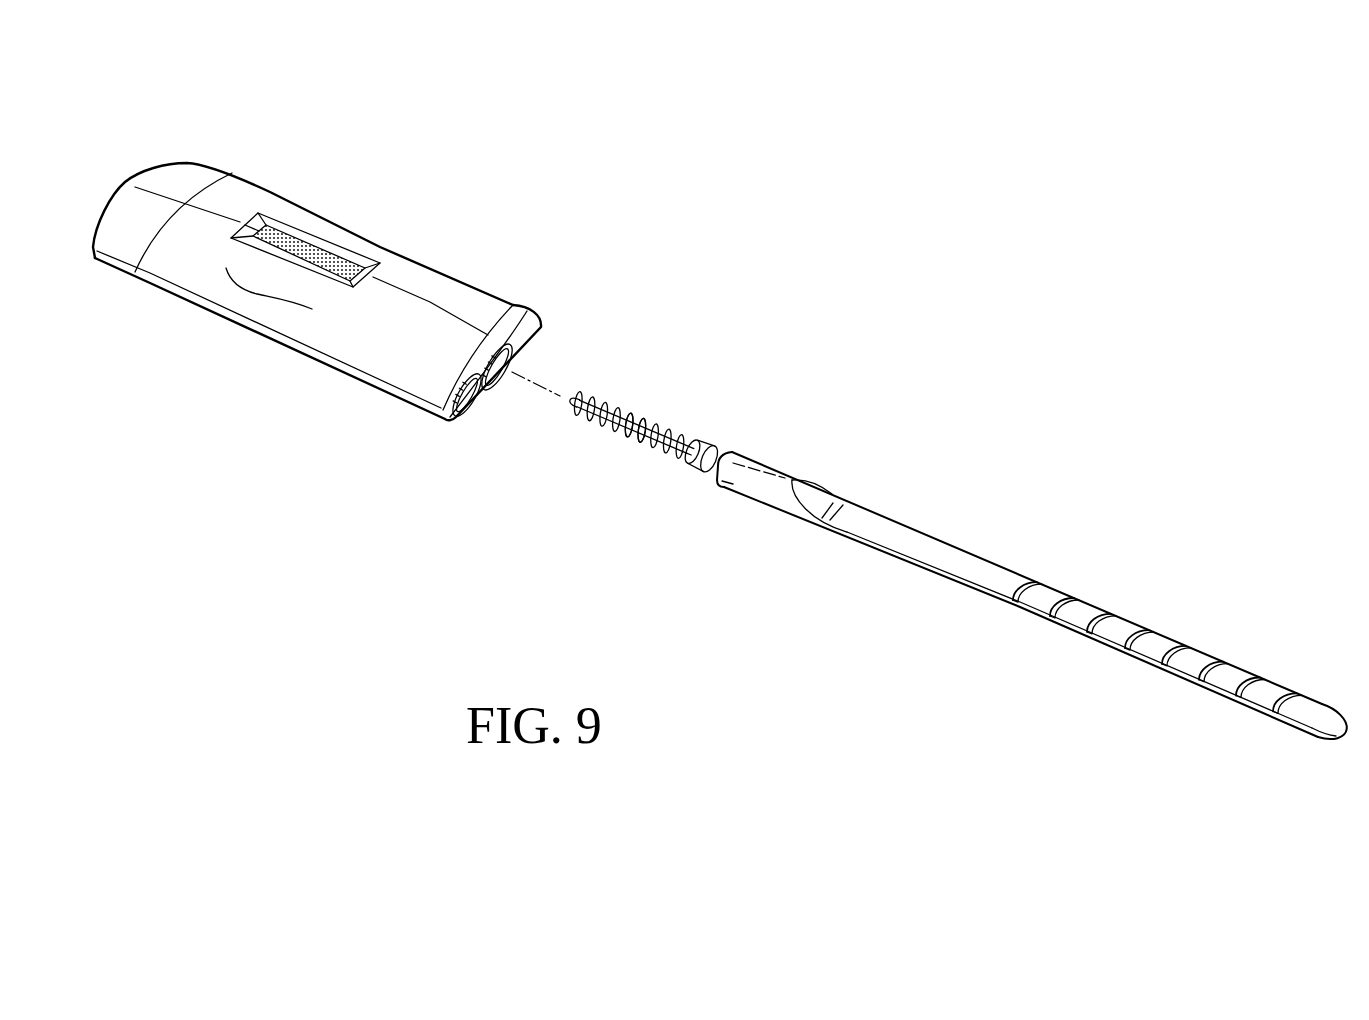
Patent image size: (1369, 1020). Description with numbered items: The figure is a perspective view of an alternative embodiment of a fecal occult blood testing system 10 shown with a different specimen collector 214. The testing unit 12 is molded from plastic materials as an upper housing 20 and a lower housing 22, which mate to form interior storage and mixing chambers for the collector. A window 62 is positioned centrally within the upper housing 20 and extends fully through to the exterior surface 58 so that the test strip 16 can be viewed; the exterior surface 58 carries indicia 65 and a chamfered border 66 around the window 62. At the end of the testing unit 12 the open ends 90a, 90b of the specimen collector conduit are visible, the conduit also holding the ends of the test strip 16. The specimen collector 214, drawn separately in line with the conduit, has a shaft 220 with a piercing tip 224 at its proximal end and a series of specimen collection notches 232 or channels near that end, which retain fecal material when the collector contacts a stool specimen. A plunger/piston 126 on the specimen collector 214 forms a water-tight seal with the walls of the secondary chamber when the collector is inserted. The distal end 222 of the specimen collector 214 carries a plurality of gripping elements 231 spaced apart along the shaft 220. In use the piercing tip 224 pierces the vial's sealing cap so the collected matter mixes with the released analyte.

The testing system 10 is at (120, 187).
The testing unit 12 is at (457, 273).
The test strip 16 is at (345, 258).
The upper housing 20 is at (541, 324).
The lower housing 22 is at (421, 414).
The exterior surface 58 is at (495, 310).
The window 62 is at (277, 233).
The indicia 65 is at (257, 294).
The chamfered border 66 is at (354, 262).
The open end of collector conduit 90a is at (470, 417).
The open end of collector conduit 90b is at (500, 390).
The plunger/piston 126 is at (716, 448).
The specimen collector 214 is at (1132, 553).
The shaft 220 is at (850, 513).
The distal end 222 is at (1309, 720).
The piercing tip 224 is at (633, 408).
The gripping elements 231 is at (1178, 660).
The specimen collection notches 232 is at (650, 438).